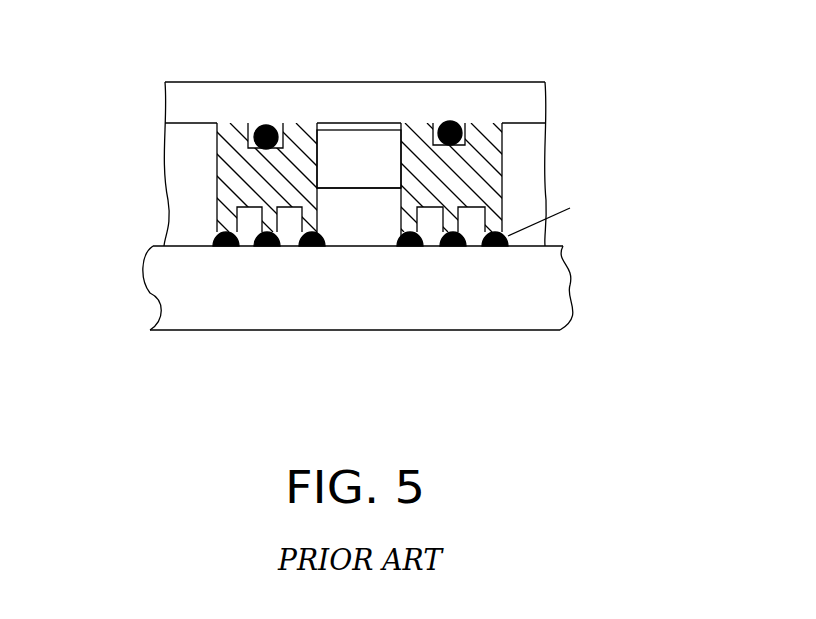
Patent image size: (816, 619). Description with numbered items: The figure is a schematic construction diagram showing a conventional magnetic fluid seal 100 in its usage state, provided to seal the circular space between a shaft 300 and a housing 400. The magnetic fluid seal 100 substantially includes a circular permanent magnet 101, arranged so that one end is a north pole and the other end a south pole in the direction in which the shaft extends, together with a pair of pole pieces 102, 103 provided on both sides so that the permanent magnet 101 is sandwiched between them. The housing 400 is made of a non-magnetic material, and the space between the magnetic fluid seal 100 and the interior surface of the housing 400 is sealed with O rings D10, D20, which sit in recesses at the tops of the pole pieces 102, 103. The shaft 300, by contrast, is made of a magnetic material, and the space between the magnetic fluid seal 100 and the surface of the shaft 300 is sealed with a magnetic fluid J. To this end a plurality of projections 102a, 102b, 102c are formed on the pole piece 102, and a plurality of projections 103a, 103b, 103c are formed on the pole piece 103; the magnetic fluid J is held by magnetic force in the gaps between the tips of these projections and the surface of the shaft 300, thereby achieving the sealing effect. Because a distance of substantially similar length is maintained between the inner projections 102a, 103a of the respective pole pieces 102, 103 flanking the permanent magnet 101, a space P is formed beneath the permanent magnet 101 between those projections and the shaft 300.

The magnetic fluid seal 100 is at (206, 167).
The permanent magnet 101 is at (362, 130).
The pole piece 102 is at (231, 176).
The projection 102a is at (305, 233).
The projection 102b is at (262, 233).
The projection 102c is at (222, 233).
The pole piece 103 is at (496, 153).
The projection 103a is at (400, 233).
The projection 103b is at (443, 233).
The projection 103c is at (486, 233).
The shaft 300 is at (553, 325).
The housing 400 is at (523, 82).
The O ring D10 is at (266, 125).
The O ring D20 is at (451, 121).
The magnetic fluid J is at (543, 218).
The space P is at (352, 221).